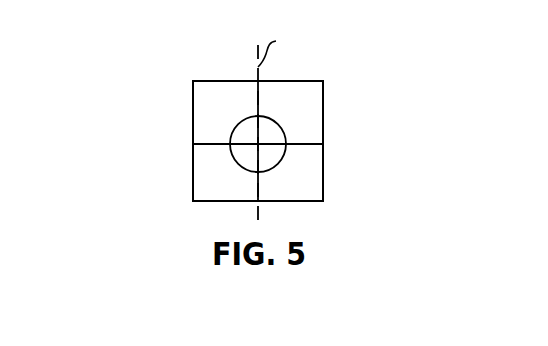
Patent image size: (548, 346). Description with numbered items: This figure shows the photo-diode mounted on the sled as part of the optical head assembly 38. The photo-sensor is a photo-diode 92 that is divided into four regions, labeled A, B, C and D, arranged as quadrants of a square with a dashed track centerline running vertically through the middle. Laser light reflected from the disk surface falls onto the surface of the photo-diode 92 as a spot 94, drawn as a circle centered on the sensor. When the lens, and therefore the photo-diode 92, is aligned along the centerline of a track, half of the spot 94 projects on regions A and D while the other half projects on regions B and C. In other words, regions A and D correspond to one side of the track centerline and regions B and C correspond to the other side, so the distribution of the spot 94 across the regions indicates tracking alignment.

The optical head assembly 38 is at (244, 127).
The photo-diode 92 is at (323, 103).
The spot 94 is at (273, 137).